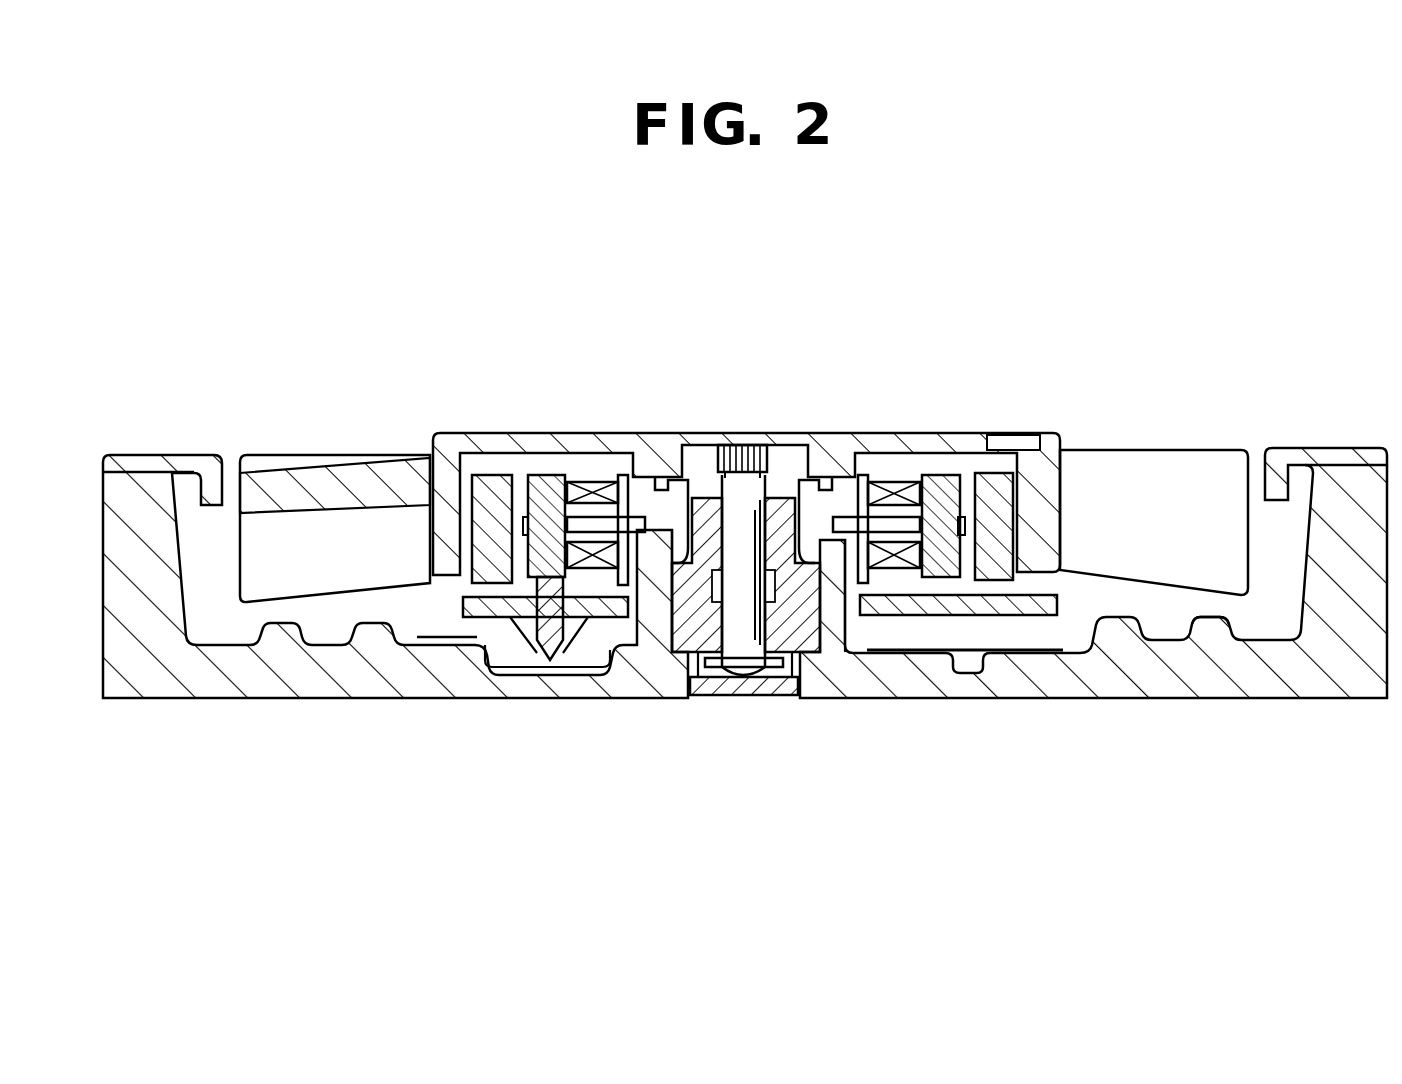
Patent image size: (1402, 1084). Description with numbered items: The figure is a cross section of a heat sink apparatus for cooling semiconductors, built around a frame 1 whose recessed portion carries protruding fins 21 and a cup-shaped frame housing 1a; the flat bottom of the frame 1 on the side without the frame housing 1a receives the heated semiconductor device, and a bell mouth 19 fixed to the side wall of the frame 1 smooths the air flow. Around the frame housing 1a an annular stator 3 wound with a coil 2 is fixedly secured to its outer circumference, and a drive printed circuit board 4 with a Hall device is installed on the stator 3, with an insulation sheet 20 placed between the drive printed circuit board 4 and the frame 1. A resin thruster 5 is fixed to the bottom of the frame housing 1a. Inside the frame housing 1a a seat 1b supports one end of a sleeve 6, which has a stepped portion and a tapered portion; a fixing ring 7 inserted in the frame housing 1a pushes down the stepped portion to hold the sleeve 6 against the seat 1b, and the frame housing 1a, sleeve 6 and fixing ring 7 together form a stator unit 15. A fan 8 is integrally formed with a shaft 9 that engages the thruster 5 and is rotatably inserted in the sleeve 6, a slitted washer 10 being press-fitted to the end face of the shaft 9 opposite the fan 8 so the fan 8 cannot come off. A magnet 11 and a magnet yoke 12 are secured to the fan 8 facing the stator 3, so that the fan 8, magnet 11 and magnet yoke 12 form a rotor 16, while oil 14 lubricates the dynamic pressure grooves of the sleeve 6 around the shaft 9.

The frame 1 is at (222, 698).
The frame housing 1a is at (650, 500).
The seat 1b is at (680, 655).
The coil 2 is at (893, 490).
The stator 3 is at (600, 590).
The drive printed circuit board 4 is at (478, 600).
The thruster 5 is at (778, 685).
The sleeve 6 is at (865, 618).
The fixing ring 7 is at (823, 470).
The fan 8 is at (368, 478).
The shaft 9 is at (750, 655).
The washer 10 is at (712, 665).
The magnet 11 is at (1047, 465).
The magnet yoke 12 is at (478, 460).
The oil 14 is at (805, 610).
The stator unit 15 is at (506, 698).
The rotor 16 is at (662, 500).
The bell mouth 19 is at (1327, 450).
The insulation sheet 20 is at (970, 653).
The fins 21 is at (1205, 617).